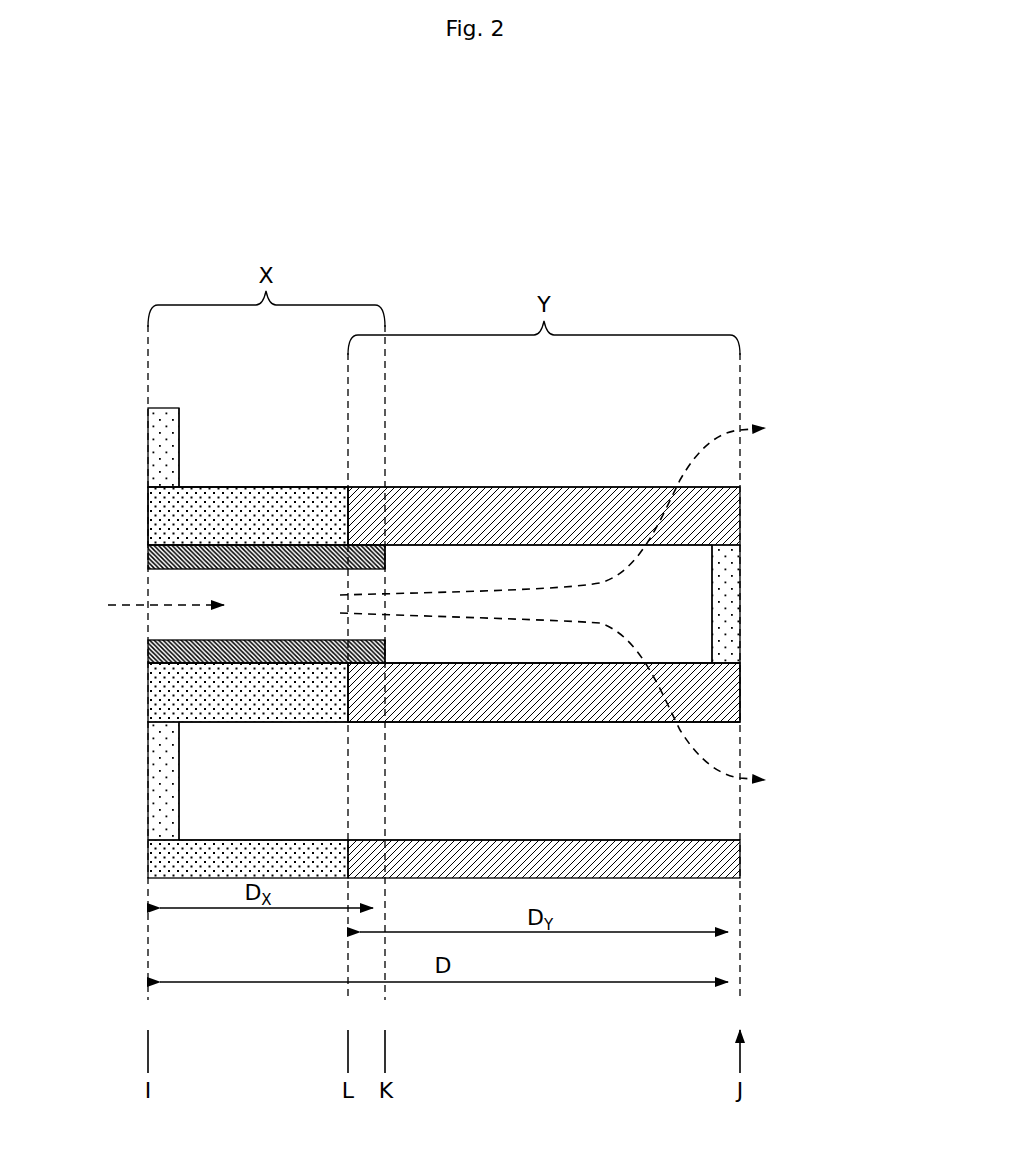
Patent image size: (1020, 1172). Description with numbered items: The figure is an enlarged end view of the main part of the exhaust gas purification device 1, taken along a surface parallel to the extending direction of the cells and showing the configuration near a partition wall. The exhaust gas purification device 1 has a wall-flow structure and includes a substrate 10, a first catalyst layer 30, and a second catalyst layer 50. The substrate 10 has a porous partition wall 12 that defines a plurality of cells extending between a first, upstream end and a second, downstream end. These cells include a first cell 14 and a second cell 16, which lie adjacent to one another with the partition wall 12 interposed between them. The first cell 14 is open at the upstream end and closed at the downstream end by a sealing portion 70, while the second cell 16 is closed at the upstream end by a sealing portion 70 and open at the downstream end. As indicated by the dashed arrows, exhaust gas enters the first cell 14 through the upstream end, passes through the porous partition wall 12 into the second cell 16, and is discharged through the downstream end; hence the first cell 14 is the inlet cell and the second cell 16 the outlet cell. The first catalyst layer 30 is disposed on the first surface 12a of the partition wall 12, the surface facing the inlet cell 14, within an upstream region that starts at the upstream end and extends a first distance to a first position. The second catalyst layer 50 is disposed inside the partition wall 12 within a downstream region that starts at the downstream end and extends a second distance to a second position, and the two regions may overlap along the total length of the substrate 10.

The exhaust gas purification device 1 is at (472, 611).
The substrate 10 is at (263, 492).
The partition wall 12 is at (160, 509).
The first surface 12a is at (258, 662).
The first cell 14 is at (617, 618).
The second cell 16 is at (391, 455).
The first catalyst layer 30 is at (160, 653).
The second catalyst layer 50 is at (522, 700).
The sealing portion 70 is at (160, 428).